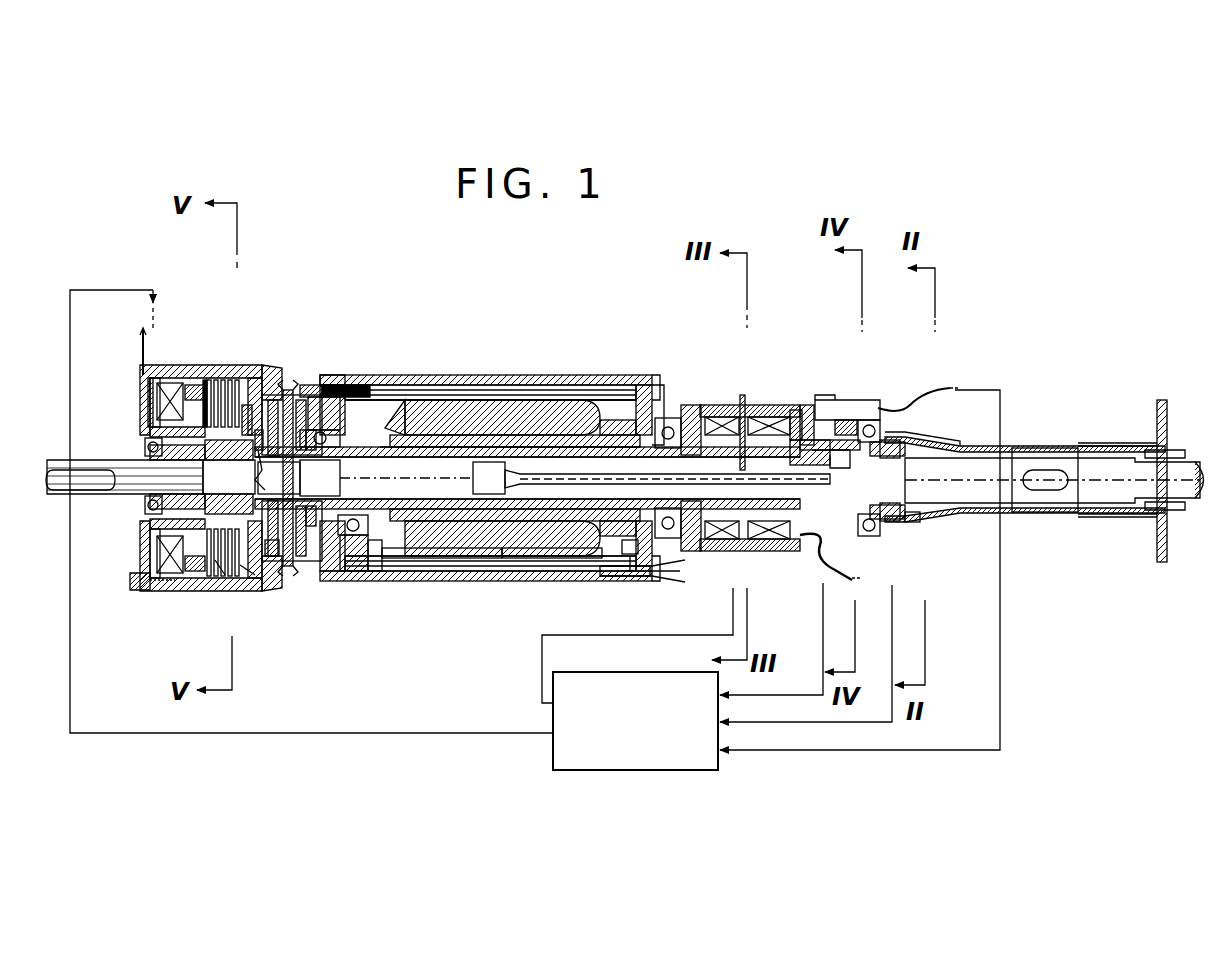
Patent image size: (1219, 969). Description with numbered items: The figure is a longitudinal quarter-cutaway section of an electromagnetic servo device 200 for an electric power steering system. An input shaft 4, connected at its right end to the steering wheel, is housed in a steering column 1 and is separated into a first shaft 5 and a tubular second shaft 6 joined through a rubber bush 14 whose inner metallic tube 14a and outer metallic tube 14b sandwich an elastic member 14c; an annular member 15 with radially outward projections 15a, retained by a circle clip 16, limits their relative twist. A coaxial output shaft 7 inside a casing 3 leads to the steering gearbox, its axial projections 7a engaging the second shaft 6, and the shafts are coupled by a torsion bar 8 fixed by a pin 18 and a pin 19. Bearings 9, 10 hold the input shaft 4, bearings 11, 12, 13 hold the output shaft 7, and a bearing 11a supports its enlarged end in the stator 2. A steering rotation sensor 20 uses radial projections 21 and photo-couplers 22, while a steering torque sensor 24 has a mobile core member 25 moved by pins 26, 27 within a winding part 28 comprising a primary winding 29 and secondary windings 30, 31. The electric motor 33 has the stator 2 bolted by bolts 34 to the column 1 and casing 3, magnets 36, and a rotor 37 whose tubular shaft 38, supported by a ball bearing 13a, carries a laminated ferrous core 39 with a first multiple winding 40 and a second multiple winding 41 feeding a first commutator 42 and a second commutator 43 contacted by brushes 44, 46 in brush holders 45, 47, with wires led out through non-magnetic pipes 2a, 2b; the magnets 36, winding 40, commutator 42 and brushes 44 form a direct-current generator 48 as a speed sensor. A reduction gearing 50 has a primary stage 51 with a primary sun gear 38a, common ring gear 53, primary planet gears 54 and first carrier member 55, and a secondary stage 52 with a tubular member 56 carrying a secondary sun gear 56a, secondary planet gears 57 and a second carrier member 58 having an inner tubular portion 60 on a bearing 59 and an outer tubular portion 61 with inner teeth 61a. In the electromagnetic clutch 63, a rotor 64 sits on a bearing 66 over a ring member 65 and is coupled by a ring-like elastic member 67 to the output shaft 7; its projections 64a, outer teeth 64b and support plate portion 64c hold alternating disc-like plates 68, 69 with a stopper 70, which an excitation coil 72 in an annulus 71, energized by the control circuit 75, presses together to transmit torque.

The steering column 1 is at (1094, 444).
The stator 2 is at (648, 376).
The non-magnetic pipe 2a is at (445, 580).
The non-magnetic pipe 2b is at (658, 589).
The casing 3 is at (316, 390).
The input shaft 4 is at (1002, 450).
The first shaft 5 is at (992, 484).
The second shaft 6 is at (815, 445).
The output shaft 7 is at (380, 484).
The axial projections 7a is at (700, 538).
The torsion bar 8 is at (475, 498).
The bearing 9 is at (1170, 452).
The bearing 10 is at (888, 440).
The bearing 11 is at (673, 430).
The bearing 11a is at (648, 430).
The needle bearing 12 is at (612, 440).
The needle bearing 13 is at (322, 463).
The ball bearing 13a is at (338, 426).
The rubber bush 14 is at (870, 525).
The inner metallic tube 14a is at (857, 528).
The outer metallic tube 14b is at (885, 522).
The elastic member 14c is at (882, 490).
The annular member 15 is at (945, 518).
The radially outward projections 15a is at (910, 522).
The circle clip 16 is at (928, 446).
The pin 18 is at (818, 540).
The pin 19 is at (490, 450).
The steering rotation sensor 20 is at (838, 398).
The radial projections 21 is at (878, 406).
The photo-couplers 22 is at (845, 420).
The steering torque sensor 24 is at (752, 408).
The mobile tubular ferrous core member 25 is at (800, 440).
The pins 26 is at (748, 541).
The pins 27 is at (742, 395).
The winding part 28 is at (722, 408).
The primary winding 29 is at (795, 410).
The secondary winding 30 is at (805, 410).
The secondary winding 31 is at (706, 405).
The electric motor 33 is at (510, 356).
The bolts 34 is at (560, 392).
The magnets 36 is at (530, 570).
The rotor 37 is at (540, 392).
The tubular shaft 38 is at (430, 478).
The primary sun gear 38a is at (335, 535).
The laminated ferrous core 39 is at (450, 446).
The first multiple winding 40 is at (405, 422).
The second multiple winding 41 is at (422, 410).
The first commutator 42 is at (585, 558).
The second commutator 43 is at (395, 560).
The brushes 44 is at (628, 560).
The brush holder 45 is at (640, 578).
The brushes 46 is at (375, 572).
The brush holder 47 is at (352, 570).
The direct-current generator 48 is at (500, 532).
The reduction gearing 50 is at (279, 365).
The primary stage 51 is at (305, 383).
The secondary stage 52 is at (266, 400).
The common ring gear 53 is at (298, 398).
The primary planet gears 54 is at (332, 392).
The first carrier member 55 is at (308, 428).
The tubular member 56 is at (288, 530).
The secondary sun gear 56a is at (272, 548).
The secondary planet gears 57 is at (259, 366).
The second carrier member 58 is at (246, 395).
The bearing 59 is at (286, 478).
The inner tubular portion 60 is at (229, 477).
The outer tubular portion 61 is at (215, 382).
The inner teeth 61a is at (222, 382).
The electromagnetic clutch 63 is at (160, 598).
The rotor 64 is at (150, 446).
The projections 64a is at (115, 500).
The outer teeth 64b is at (150, 428).
The support plate portion 64c is at (192, 388).
The ring member 65 is at (147, 452).
The bearing 66 is at (147, 446).
The ring-like elastic member 67 is at (147, 502).
The disc-like plates 68 is at (200, 576).
The disc-like plates 69 is at (222, 572).
The stopper 70 is at (245, 562).
The annulus 71 is at (148, 402).
The excitation coil 72 is at (155, 390).
The control circuit 75 is at (668, 770).
The electromagnetic servo device 200 is at (1080, 618).